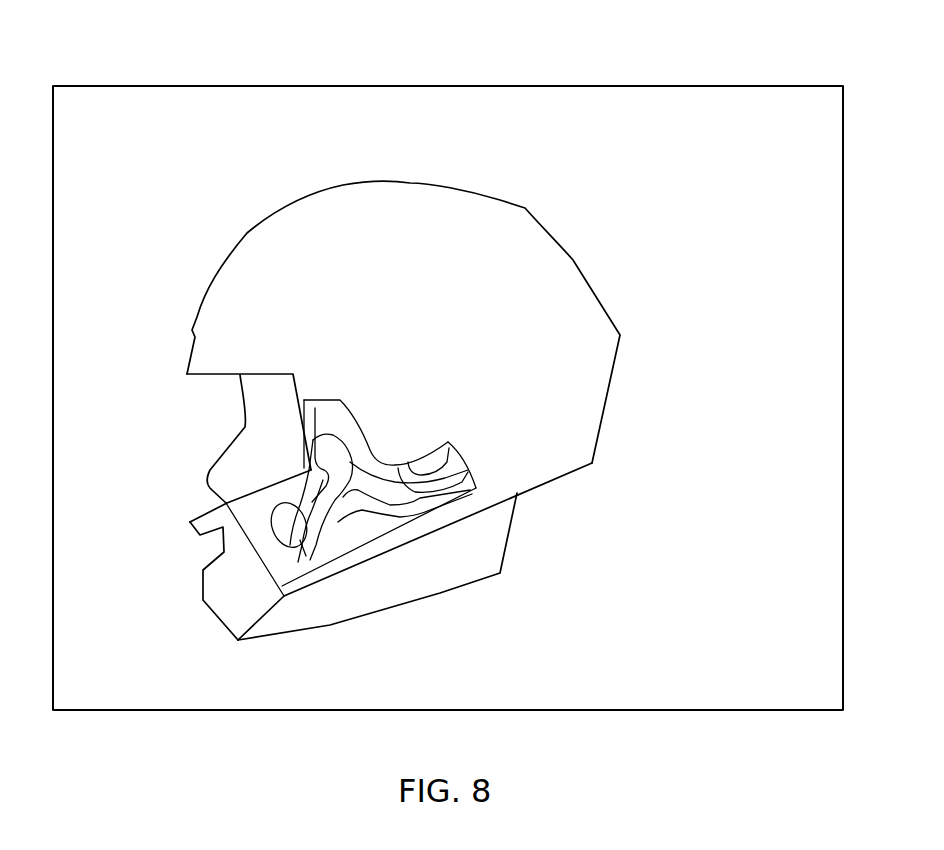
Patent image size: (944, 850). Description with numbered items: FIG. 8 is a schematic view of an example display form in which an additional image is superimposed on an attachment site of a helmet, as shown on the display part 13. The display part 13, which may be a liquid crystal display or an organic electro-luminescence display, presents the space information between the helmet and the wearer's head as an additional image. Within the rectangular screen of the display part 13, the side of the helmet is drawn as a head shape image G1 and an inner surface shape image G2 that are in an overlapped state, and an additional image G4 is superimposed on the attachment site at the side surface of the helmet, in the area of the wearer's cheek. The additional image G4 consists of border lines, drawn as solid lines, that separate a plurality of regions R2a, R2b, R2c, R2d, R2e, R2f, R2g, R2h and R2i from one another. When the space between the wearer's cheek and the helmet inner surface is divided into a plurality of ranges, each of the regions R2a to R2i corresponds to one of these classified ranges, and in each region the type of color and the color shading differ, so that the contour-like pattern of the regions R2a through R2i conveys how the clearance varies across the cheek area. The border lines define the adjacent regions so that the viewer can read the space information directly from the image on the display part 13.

The display part 13 is at (450, 86).
The head shape image G1 is at (214, 458).
The inner surface shape image G2 is at (525, 208).
The additional image G4 is at (493, 515).
The region R2a is at (448, 443).
The region R2b is at (463, 457).
The region R2c is at (377, 455).
The region R2d is at (352, 425).
The region R2e is at (330, 408).
The region R2f is at (267, 552).
The region R2g is at (321, 575).
The region R2h is at (362, 535).
The region R2i is at (418, 525).